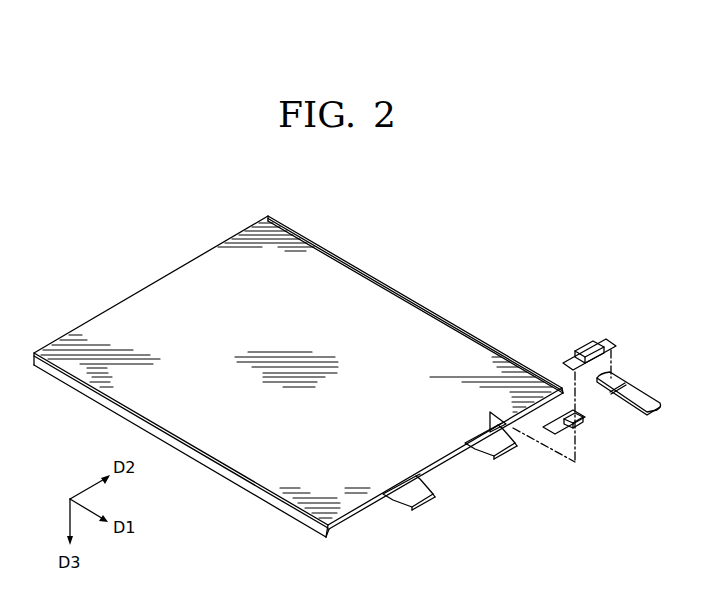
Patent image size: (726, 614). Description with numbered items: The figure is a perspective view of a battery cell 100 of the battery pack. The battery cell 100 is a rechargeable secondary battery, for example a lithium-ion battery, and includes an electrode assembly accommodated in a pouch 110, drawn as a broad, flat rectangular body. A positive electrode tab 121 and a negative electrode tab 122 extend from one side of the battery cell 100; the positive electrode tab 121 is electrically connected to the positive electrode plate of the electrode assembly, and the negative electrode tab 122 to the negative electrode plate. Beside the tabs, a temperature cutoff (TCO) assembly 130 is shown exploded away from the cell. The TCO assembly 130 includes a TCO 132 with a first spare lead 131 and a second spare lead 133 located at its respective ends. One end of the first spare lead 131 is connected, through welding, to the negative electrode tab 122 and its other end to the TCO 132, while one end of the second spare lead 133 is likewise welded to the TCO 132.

The battery cell 100 is at (343, 240).
The pouch 110 is at (166, 283).
The positive electrode tab 121 is at (418, 507).
The negative electrode tab 122 is at (497, 442).
The temperature cutoff (TCO) assembly 130 is at (603, 403).
The first spare lead 131 is at (563, 424).
The TCO 132 is at (587, 349).
The second spare lead 133 is at (648, 405).